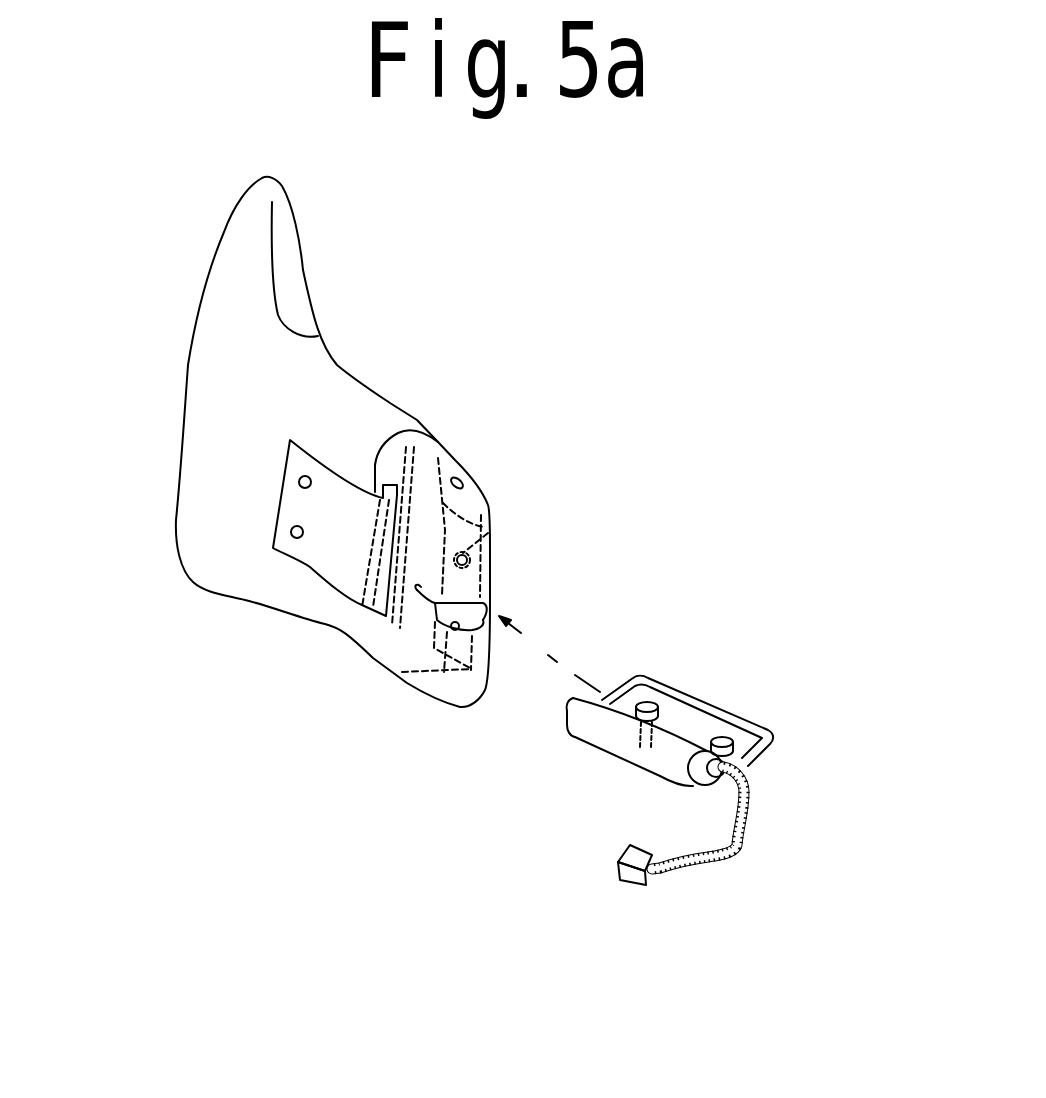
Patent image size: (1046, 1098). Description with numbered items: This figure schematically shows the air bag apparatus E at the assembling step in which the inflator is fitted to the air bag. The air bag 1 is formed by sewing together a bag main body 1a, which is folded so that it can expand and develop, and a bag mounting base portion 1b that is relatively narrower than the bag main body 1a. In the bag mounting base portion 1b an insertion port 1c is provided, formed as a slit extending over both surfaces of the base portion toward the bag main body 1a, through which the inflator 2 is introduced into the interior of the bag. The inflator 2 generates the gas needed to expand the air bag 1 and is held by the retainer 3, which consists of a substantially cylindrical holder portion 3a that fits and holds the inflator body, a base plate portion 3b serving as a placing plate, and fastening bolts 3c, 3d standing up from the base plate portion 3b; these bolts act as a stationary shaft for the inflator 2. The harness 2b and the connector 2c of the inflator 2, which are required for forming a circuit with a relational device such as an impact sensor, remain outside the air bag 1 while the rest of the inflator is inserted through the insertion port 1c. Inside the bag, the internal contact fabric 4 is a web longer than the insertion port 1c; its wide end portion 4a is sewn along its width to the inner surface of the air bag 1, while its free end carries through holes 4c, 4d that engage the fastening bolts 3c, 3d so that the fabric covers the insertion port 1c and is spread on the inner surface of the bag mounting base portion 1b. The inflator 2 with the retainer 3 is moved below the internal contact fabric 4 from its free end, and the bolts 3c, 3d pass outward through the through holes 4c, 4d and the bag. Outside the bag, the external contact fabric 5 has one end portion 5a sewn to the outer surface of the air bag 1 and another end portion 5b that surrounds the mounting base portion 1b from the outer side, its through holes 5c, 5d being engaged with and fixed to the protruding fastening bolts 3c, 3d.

The air bag apparatus E is at (212, 204).
The air bag 1 is at (186, 315).
The bag main body 1a is at (287, 347).
The bag mounting base portion 1b is at (478, 497).
The insertion port 1c is at (493, 608).
The inflator 2 is at (710, 794).
The harness 2b is at (743, 852).
The connector 2c is at (613, 857).
The retainer 3 is at (710, 691).
The holder portion 3a is at (610, 731).
The base plate portion 3b is at (777, 735).
The fastening bolt 3c is at (647, 702).
The fastening bolt 3d is at (728, 735).
The internal contact fabric 4 is at (430, 666).
The end portion 4a is at (395, 628).
The through hole 4c is at (471, 670).
The through hole 4d is at (497, 536).
The external contact fabric 5 is at (343, 613).
The end portion 5a is at (383, 450).
The end portion 5b is at (280, 490).
The through hole 5c is at (297, 538).
The through hole 5d is at (302, 452).